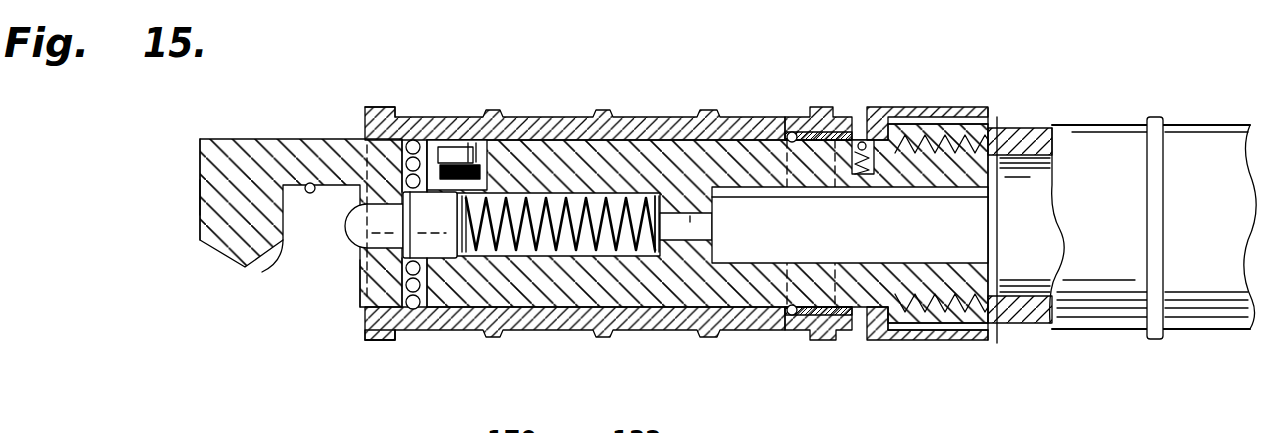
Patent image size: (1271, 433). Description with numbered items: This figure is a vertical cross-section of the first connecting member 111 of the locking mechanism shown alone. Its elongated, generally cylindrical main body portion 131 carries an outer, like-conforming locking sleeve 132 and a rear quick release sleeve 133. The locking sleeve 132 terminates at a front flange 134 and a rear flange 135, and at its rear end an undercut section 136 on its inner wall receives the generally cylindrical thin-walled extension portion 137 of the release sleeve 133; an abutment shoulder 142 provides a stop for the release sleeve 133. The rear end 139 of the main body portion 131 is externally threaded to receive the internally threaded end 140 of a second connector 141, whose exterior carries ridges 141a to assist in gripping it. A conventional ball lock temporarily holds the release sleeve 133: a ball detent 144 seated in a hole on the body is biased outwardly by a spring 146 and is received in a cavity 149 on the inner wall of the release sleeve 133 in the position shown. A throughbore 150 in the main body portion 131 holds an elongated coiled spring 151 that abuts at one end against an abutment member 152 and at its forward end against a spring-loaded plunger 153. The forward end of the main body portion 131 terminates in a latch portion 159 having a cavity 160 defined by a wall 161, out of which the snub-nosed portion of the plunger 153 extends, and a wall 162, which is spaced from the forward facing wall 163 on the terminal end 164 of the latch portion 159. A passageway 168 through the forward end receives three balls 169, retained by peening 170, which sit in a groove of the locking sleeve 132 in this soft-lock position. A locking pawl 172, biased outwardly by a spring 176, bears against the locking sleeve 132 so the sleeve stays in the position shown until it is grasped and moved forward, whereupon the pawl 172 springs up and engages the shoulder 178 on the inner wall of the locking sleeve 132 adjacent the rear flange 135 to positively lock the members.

The first connecting member 111 is at (542, 206).
The main body portion 131 is at (600, 294).
The locking sleeve 132 is at (655, 117).
The quick release sleeve 133 is at (960, 345).
The front flange 134 is at (378, 107).
The rear flange 135 is at (820, 343).
The undercut section 136 is at (777, 117).
The extension portion 137 is at (843, 127).
The rear end 139 is at (955, 127).
The internally threaded end 140 is at (549, 258).
The second connector 141 is at (1188, 152).
The ridges 141a is at (1162, 267).
The abutment shoulder 142 is at (913, 343).
The ball detent 144 is at (878, 108).
The spring 146 is at (860, 143).
The cavity 149 is at (877, 343).
The throughbore 150 is at (712, 226).
The coiled spring 151 is at (630, 252).
The abutment member 152 is at (656, 240).
The spring-loaded plunger 153 is at (341, 241).
The latch portion 159 is at (253, 143).
The cavity 160 is at (308, 183).
The wall 161 is at (356, 290).
The wall 162 is at (283, 248).
The forward facing wall 163 is at (200, 192).
The terminal end 164 is at (246, 190).
The passageway 168 is at (368, 340).
The balls 169 is at (411, 139).
The peening 170 is at (436, 138).
The locking pawl 172 is at (484, 143).
The spring 176 is at (500, 170).
The shoulder 178 is at (795, 330).